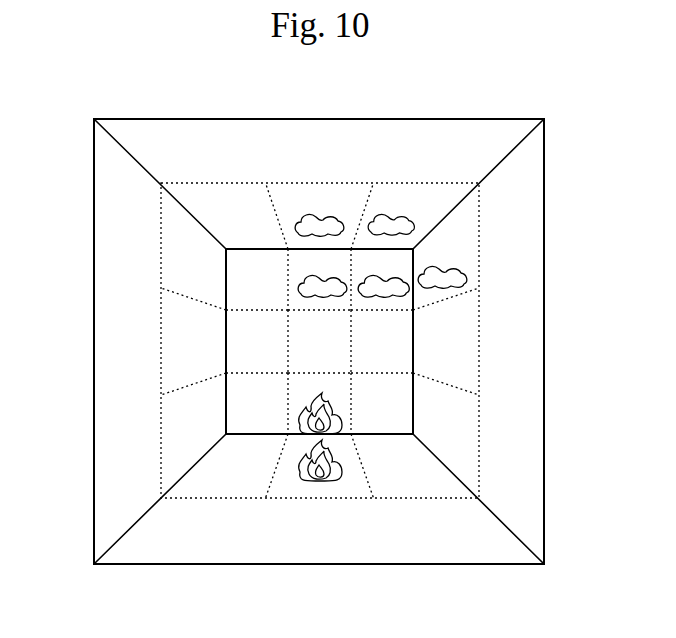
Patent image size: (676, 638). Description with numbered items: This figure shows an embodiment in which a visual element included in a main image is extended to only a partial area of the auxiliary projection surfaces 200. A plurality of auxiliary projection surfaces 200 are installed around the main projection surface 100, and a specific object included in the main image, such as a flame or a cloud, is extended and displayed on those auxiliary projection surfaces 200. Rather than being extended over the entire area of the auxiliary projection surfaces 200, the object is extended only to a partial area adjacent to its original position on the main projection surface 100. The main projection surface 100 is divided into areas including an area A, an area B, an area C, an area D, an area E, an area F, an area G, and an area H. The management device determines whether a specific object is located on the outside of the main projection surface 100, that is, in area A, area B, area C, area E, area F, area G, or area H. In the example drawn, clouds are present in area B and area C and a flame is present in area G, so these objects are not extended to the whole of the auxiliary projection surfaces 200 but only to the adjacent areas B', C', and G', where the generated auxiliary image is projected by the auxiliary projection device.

The auxiliary projection surfaces 200 is at (320, 343).
The main projection surface 100 is at (411, 341).
The area A is at (257, 279).
The area B is at (319, 279).
The area C is at (382, 279).
The area D is at (257, 341).
The area E is at (382, 341).
The area F is at (257, 403).
The area G is at (319, 403).
The area H is at (382, 403).